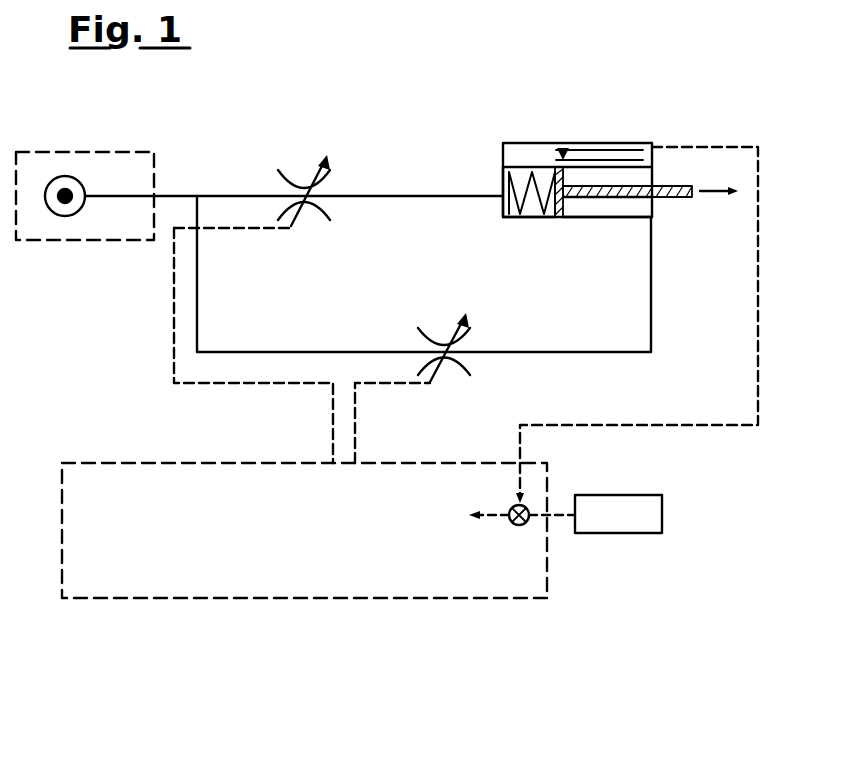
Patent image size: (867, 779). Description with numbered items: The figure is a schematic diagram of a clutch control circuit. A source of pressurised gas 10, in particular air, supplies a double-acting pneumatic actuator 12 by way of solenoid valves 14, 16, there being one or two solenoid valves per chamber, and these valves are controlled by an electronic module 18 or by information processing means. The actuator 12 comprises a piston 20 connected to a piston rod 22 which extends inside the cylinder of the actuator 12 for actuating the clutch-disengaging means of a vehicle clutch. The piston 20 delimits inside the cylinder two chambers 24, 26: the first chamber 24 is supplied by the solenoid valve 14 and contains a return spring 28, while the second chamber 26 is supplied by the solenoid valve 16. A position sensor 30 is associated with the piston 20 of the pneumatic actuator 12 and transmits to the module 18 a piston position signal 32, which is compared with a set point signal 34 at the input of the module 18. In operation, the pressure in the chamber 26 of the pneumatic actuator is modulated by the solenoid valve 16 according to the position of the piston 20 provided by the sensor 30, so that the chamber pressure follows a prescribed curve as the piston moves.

The source of pressurised gas 10 is at (83, 152).
The double-acting pneumatic actuator 12 is at (585, 188).
The solenoid valve 14 is at (288, 177).
The solenoid valve 16 is at (428, 333).
The electronic module 18 is at (136, 462).
The piston 20 is at (560, 217).
The piston rod 22 is at (672, 200).
The first chamber 24 is at (515, 167).
The second chamber 26 is at (628, 207).
The return spring 28 is at (502, 182).
The position sensor 30 is at (565, 143).
The piston position signal 32 is at (660, 425).
The set point signal 34 is at (553, 515).